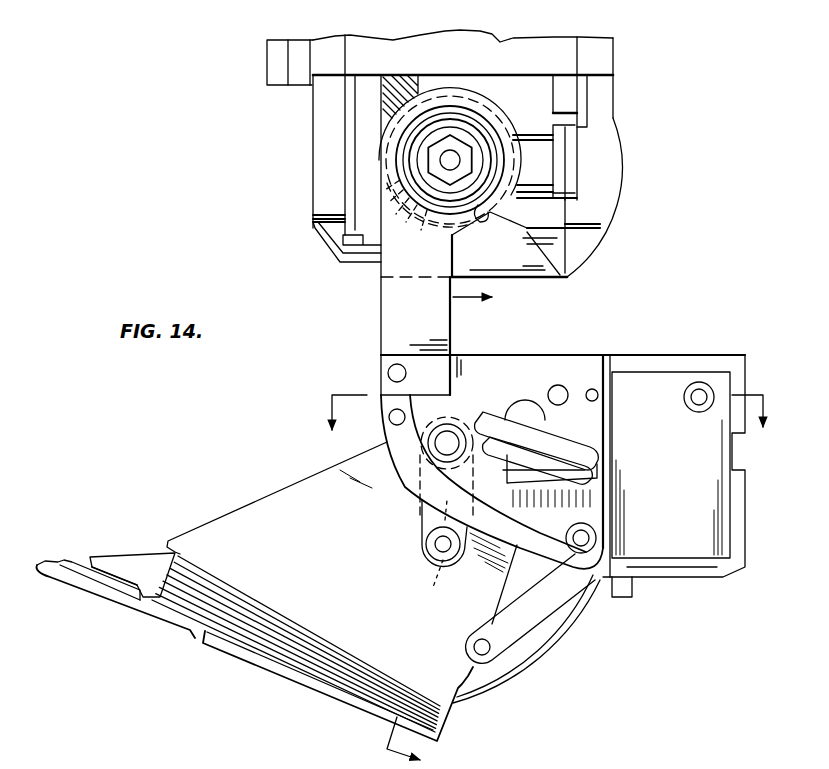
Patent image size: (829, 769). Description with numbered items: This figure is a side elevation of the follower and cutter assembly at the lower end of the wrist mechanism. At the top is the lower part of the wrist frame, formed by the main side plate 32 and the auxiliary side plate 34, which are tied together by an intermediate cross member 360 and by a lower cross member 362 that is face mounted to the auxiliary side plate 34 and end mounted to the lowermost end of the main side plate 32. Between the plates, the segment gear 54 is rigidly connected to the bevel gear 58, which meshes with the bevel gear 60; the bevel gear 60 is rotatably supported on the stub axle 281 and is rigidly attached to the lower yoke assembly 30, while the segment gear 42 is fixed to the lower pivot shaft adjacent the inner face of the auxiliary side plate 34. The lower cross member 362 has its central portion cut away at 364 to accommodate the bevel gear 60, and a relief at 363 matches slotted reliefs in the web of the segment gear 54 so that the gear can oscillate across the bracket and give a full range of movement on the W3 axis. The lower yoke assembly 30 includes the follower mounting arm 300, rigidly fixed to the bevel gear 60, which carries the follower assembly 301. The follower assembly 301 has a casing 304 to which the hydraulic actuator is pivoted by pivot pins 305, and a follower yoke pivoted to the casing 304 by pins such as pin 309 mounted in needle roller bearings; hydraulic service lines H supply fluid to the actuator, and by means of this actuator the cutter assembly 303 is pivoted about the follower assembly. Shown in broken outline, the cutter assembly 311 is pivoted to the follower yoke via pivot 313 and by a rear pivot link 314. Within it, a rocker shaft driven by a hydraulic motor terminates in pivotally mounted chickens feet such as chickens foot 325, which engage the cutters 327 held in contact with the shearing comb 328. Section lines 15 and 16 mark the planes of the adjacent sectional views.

The intermediate cross member 360 is at (410, 52).
The segment gear 42 is at (560, 95).
The bevel gear 58 is at (392, 90).
The main side plate 32 is at (322, 145).
The stub axle 281 is at (450, 160).
The segment gear 54 is at (390, 195).
The relief 363 is at (350, 248).
The bevel gear 60 is at (507, 168).
The auxiliary side plate 34 is at (587, 192).
The cut-away central portion 364 is at (497, 232).
The lower cross member 362 is at (552, 279).
The follower mounting arm 300 is at (400, 305).
The section line 16 is at (443, 533).
The casing 304 is at (507, 393).
The follower assembly 301 is at (606, 350).
The pivot pin 305 is at (700, 395).
The section line 15 is at (534, 427).
The lower yoke assembly 30 is at (368, 357).
The cutter assembly 303 is at (232, 506).
The cutter 327 is at (72, 560).
The chickens foot 325 is at (145, 570).
The cutter assembly 311 is at (330, 553).
The shearing comb 328 is at (275, 686).
The pin 309 is at (447, 450).
The pivot 313 is at (440, 543).
The rear pivot link 314 is at (543, 603).
The hydraulic service lines H is at (527, 660).